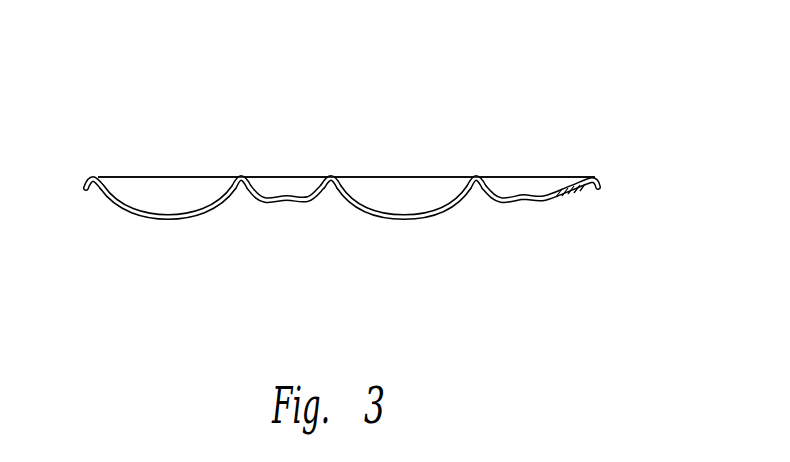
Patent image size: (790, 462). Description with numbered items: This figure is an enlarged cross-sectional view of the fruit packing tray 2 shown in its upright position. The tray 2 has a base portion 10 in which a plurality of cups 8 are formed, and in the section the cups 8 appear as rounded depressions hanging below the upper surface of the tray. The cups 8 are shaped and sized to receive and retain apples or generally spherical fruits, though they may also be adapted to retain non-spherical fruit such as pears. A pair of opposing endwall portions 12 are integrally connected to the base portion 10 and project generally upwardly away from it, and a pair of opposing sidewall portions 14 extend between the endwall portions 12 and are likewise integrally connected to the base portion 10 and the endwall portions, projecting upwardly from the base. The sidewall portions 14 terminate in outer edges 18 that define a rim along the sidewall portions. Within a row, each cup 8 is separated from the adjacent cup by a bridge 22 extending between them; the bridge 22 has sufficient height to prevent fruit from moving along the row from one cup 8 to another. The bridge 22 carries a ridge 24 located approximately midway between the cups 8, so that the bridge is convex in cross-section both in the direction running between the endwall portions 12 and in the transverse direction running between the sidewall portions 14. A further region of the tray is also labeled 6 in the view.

The fruit packing tray 2 is at (423, 88).
The edge region 6 is at (580, 165).
The cup 8 is at (170, 195).
The base portion 10 is at (452, 206).
The endwall portion 12 is at (435, 162).
The sidewall portion 14 is at (112, 202).
The outer edge 18 is at (88, 183).
The bridge 22 is at (318, 180).
The ridge 24 is at (287, 196).